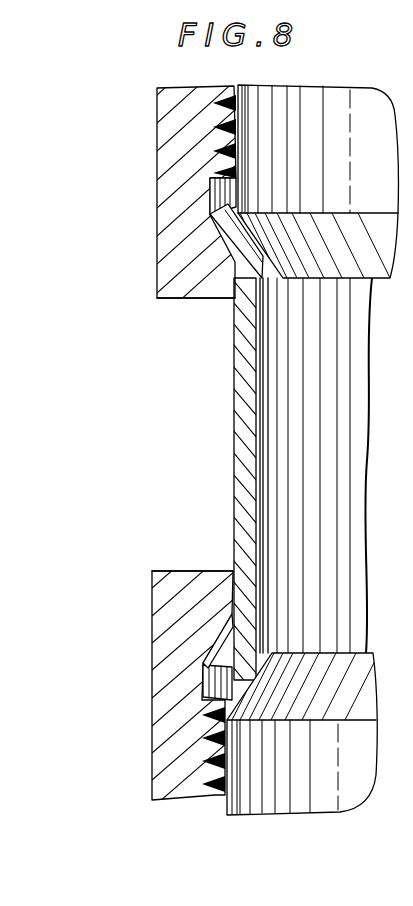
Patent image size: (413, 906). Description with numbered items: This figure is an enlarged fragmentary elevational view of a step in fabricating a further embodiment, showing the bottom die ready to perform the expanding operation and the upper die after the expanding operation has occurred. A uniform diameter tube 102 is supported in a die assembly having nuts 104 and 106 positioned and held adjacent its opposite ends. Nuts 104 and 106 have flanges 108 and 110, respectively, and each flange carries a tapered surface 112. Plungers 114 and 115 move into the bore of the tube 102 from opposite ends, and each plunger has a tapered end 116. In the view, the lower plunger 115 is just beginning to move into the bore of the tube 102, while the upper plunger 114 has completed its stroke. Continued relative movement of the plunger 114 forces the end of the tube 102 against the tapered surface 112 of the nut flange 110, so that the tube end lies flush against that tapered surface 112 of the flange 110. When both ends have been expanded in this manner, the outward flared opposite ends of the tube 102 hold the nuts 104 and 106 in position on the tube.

The tube 102 is at (235, 440).
The nut 104 is at (152, 625).
The nut 106 is at (175, 168).
The flange 108 is at (173, 575).
The flange 110 is at (178, 278).
The tapered surface 112 is at (226, 228).
The plunger 114 is at (300, 104).
The plunger 115 is at (313, 790).
The tapered end 116 is at (238, 340).